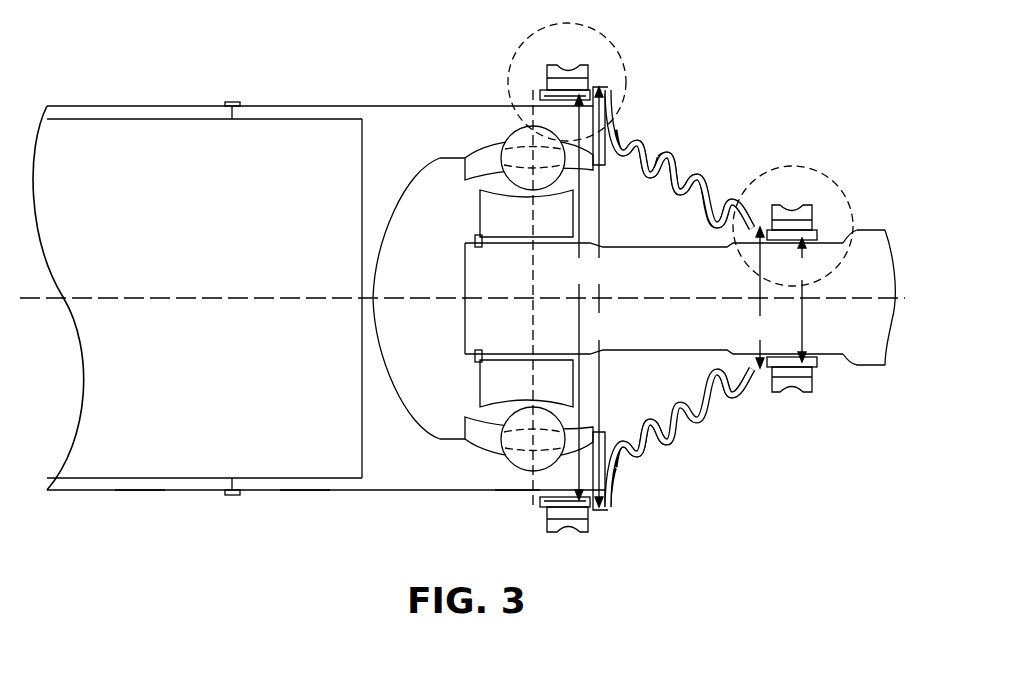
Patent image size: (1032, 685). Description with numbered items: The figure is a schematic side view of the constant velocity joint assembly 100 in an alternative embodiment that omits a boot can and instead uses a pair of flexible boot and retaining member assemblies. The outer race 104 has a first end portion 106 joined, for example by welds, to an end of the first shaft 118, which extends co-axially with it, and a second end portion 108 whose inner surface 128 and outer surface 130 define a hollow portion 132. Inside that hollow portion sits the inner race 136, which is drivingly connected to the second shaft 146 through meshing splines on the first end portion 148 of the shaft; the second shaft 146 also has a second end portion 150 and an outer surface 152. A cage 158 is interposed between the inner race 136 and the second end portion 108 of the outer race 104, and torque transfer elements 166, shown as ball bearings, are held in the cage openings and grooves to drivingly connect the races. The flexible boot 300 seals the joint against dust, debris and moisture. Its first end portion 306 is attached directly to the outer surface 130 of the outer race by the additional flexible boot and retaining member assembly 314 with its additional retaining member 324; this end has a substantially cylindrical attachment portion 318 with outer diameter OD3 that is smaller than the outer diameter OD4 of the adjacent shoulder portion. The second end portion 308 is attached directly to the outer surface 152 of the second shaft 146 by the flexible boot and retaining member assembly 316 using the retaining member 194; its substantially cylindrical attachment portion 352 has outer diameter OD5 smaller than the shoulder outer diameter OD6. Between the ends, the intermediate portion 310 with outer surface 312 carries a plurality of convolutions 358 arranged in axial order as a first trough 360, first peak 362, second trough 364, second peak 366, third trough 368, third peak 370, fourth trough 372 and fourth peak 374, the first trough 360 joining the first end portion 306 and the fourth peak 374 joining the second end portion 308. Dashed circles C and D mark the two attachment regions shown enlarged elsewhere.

The constant velocity joint assembly 100 is at (342, 574).
The outer race 104 is at (378, 118).
The first end portion 106 is at (305, 492).
The second end portion 108 is at (517, 491).
The first shaft 118 is at (140, 492).
The inner surface 128 is at (433, 437).
The outer surface 130 is at (420, 491).
The hollow portion 132 is at (417, 395).
The inner race 136 is at (525, 388).
The second shaft 146 is at (689, 285).
The first end portion 148 is at (507, 352).
The second end portion 150 is at (873, 368).
The outer surface 152 is at (853, 368).
The cage 158 is at (480, 432).
The torque transfer elements 166 is at (520, 455).
The retaining member 194 is at (813, 392).
The flexible boot 300 is at (620, 452).
The first end portion 306 is at (613, 488).
The second end portion 308 is at (755, 372).
The intermediate portion 310 is at (666, 453).
The outer surface 312 is at (600, 503).
The additional flexible boot and retaining member assembly 314 is at (539, 48).
The flexible boot and retaining member assembly 316 is at (866, 230).
The substantially cylindrical attachment portion 318 is at (557, 103).
The additional retaining member 324 is at (587, 72).
The substantially cylindrical attachment portion 352 is at (810, 357).
The convolutions 358 is at (701, 439).
The first trough 360 is at (622, 162).
The first peak 362 is at (622, 148).
The second trough 364 is at (650, 152).
The second peak 366 is at (666, 150).
The third trough 368 is at (682, 178).
The third peak 370 is at (700, 167).
The fourth trough 372 is at (720, 205).
The fourth peak 374 is at (748, 187).
The detail circle C is at (510, 65).
The detail circle D is at (828, 177).
The outer diameter OD3 is at (577, 297).
The outer diameter OD4 is at (609, 297).
The outer diameter OD5 is at (791, 300).
The outer diameter OD6 is at (764, 297).